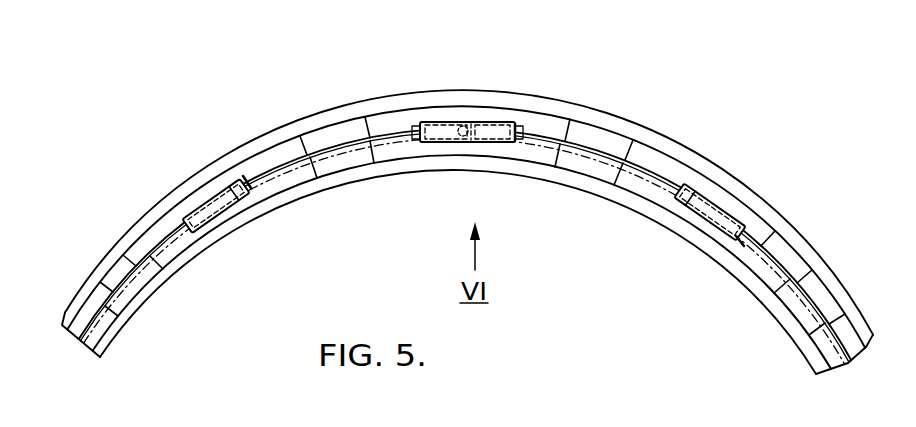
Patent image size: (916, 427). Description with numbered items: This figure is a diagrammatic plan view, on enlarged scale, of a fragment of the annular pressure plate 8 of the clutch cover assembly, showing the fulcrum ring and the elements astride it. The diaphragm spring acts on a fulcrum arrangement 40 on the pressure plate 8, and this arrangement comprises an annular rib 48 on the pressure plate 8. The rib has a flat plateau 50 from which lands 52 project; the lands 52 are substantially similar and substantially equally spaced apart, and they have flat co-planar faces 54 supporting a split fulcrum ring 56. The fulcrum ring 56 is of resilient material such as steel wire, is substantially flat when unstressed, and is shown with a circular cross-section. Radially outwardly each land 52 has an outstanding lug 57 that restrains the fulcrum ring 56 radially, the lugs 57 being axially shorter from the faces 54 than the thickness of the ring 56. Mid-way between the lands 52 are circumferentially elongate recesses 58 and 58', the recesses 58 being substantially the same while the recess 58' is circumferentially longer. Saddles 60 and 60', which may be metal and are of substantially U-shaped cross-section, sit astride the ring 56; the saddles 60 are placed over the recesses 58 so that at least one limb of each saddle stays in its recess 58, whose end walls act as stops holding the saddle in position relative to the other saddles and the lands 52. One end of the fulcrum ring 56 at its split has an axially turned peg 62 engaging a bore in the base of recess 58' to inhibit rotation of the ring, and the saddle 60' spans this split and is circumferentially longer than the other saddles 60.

The pressure plate 8 is at (656, 118).
The fulcrum arrangement 40 is at (672, 171).
The annular rib 48 is at (676, 140).
The flat plateau 50 is at (555, 123).
The lands 52 is at (100, 278).
The flat co-planar faces 54 is at (140, 295).
The split fulcrum ring 56 is at (385, 135).
The lug 57 is at (133, 262).
The recesses 58 is at (485, 206).
The recess 58' is at (546, 91).
The saddles 60 is at (484, 216).
The saddle 60' is at (467, 90).
The axially turned peg 62 is at (466, 138).